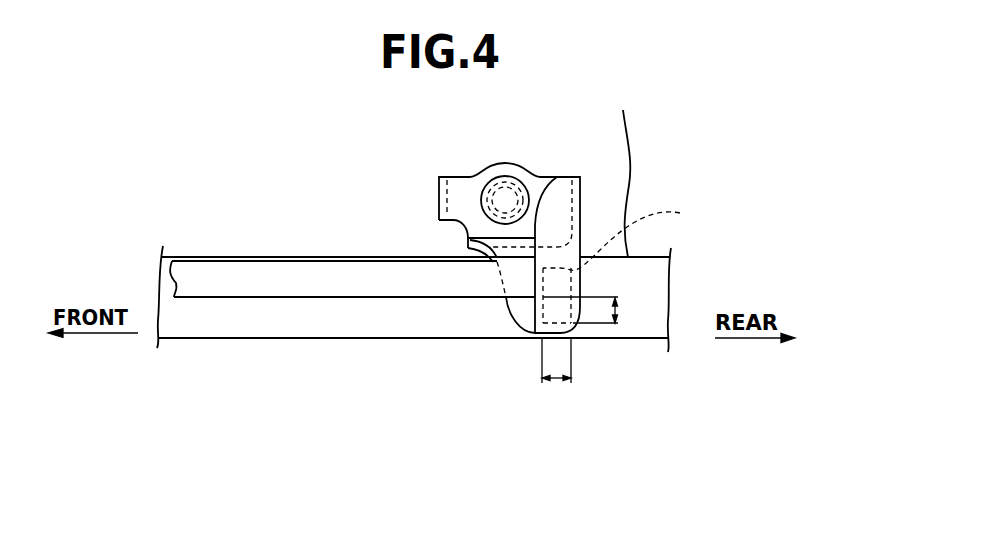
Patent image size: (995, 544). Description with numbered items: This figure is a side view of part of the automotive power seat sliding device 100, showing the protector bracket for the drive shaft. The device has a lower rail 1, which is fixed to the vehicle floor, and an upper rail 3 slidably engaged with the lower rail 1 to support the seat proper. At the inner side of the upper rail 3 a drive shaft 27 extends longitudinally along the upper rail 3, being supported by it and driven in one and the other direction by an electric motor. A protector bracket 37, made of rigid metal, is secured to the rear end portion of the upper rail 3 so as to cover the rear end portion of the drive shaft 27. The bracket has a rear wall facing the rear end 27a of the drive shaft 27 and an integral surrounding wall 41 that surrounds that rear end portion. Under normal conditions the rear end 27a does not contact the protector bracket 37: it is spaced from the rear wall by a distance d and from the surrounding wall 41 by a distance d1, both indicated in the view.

The automotive power seat sliding device 100 is at (782, 93).
The lower rail 1 is at (302, 328).
The upper rail 3 is at (614, 168).
The drive shaft 27 is at (275, 268).
The rear end of the drive shaft 27a is at (637, 260).
The protector bracket 37 is at (500, 313).
The surrounding wall 41 is at (555, 312).